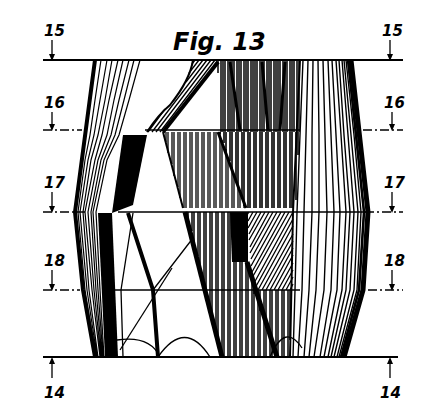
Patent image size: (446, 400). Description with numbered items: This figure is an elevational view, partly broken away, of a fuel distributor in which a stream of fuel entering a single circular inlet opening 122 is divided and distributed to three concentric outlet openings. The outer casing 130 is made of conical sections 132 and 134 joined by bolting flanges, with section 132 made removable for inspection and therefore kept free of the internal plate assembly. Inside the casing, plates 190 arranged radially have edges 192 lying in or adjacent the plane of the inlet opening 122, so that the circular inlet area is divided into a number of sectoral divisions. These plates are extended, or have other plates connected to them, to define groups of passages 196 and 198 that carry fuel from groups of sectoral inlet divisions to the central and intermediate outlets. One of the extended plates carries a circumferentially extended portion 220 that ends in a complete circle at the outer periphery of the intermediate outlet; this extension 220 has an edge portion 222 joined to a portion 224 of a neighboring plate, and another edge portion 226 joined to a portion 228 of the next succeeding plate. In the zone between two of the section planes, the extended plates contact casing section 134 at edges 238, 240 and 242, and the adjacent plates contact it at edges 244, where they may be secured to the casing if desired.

The circumferentially extended portion 220 is at (192, 80).
The edge portion 226 is at (250, 62).
The portion of plate 216 228 is at (270, 62).
The conical casing section 134 is at (355, 82).
The outer casing 130 is at (362, 158).
The conical casing section 132 is at (357, 303).
The edge portion 222 is at (123, 150).
The portion of plate 210 224 is at (108, 162).
The edge 240 is at (193, 170).
The edge 238 is at (191, 172).
The edge 242 is at (78, 215).
The edge 244 is at (70, 240).
The passage 198 is at (181, 254).
The passage 196 is at (146, 329).
The circular inlet opening 122 is at (130, 360).
The radial plate 190 is at (117, 340).
The plate edge 192 is at (207, 358).